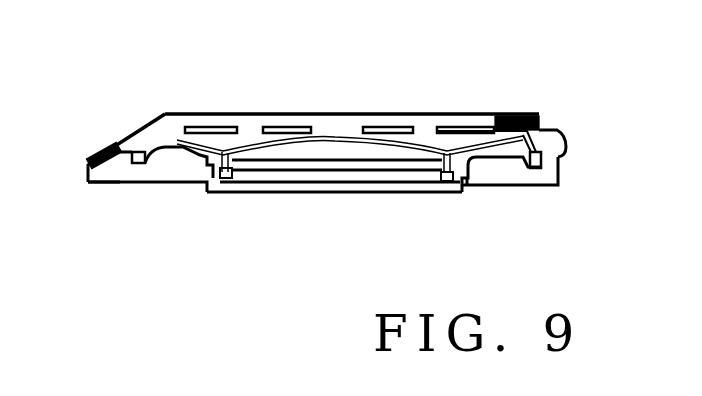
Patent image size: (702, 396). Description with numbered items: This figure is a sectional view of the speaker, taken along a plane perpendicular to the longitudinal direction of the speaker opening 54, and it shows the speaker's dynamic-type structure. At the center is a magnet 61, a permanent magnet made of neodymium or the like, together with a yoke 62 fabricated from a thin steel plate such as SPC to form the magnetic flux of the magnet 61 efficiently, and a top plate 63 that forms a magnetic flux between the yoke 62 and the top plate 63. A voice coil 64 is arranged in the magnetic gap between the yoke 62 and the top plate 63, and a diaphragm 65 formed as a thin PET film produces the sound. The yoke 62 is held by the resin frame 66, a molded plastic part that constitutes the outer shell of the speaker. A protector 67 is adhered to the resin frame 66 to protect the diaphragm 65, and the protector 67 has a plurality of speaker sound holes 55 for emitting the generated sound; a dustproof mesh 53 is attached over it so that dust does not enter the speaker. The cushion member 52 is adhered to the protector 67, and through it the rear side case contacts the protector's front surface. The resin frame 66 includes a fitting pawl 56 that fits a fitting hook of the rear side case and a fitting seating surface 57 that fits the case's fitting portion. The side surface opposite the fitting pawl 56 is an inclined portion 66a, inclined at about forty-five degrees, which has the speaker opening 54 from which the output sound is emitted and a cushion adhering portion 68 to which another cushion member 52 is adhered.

The cushion member 52 is at (98, 148).
The dustproof mesh 53 is at (187, 112).
The speaker opening 54 is at (148, 130).
The speaker sound holes 55 is at (417, 120).
The fitting pawl 56 is at (563, 158).
The fitting seating surface 57 is at (116, 168).
The magnet 61 is at (304, 171).
The yoke 62 is at (247, 193).
The top plate 63 is at (357, 166).
The voice coil 64 is at (447, 181).
The diaphragm 65 is at (438, 122).
The resin frame 66 is at (517, 186).
The inclined portion 66a is at (100, 177).
The protector 67 is at (214, 124).
The cushion adhering portion 68 is at (134, 168).